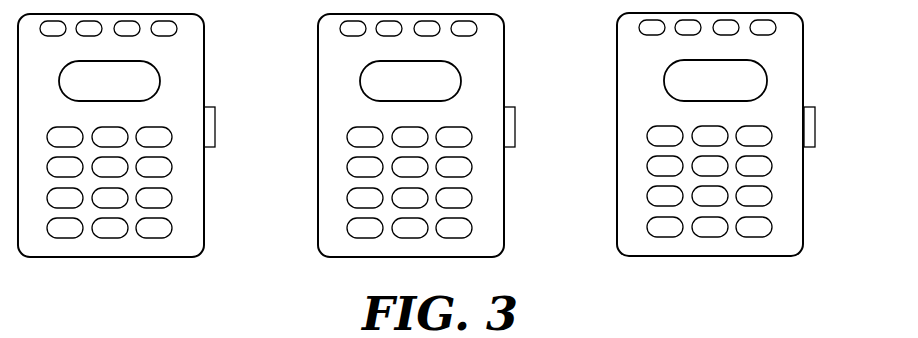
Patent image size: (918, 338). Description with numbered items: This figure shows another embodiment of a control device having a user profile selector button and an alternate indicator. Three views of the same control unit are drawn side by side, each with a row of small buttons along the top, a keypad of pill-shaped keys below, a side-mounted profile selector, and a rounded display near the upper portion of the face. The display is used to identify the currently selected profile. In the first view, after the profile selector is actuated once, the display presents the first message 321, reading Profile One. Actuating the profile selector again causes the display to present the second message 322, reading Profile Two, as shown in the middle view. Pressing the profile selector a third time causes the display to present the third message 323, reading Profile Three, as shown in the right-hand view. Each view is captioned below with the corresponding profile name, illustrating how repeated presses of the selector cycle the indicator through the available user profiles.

The first message 321 is at (147, 79).
The second message 322 is at (448, 80).
The third message 323 is at (750, 75).